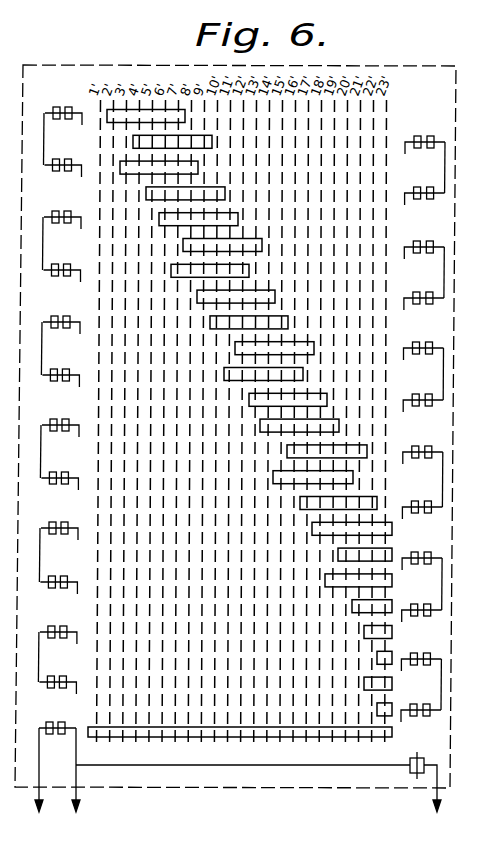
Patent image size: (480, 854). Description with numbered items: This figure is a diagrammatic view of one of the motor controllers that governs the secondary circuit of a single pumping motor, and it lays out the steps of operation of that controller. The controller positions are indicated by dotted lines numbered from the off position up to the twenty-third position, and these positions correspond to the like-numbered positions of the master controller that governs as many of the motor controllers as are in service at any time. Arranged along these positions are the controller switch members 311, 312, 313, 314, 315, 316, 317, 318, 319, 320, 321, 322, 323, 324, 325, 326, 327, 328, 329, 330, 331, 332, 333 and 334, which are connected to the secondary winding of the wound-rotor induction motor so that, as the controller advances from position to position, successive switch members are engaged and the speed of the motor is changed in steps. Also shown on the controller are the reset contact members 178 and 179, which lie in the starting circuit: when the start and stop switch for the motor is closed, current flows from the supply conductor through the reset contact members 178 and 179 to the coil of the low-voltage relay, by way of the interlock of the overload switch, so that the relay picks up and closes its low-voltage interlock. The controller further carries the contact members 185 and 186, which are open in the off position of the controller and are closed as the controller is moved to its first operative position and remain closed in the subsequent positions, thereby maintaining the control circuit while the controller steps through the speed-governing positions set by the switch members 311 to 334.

The controller switch member 311 is at (68, 119).
The controller switch member 312 is at (67, 171).
The controller switch member 313 is at (427, 148).
The controller switch member 314 is at (427, 199).
The controller switch member 315 is at (67, 223).
The controller switch member 316 is at (66, 276).
The controller switch member 317 is at (426, 253).
The controller switch member 318 is at (426, 304).
The controller switch member 319 is at (66, 328).
The controller switch member 320 is at (65, 381).
The controller switch member 321 is at (426, 354).
The controller switch member 322 is at (425, 406).
The controller switch member 323 is at (65, 431).
The controller switch member 324 is at (64, 484).
The controller switch member 325 is at (425, 458).
The controller switch member 326 is at (424, 513).
The controller switch member 327 is at (64, 534).
The controller switch member 328 is at (63, 588).
The controller switch member 329 is at (424, 564).
The controller switch member 330 is at (424, 616).
The controller switch member 331 is at (63, 638).
The controller switch member 332 is at (62, 688).
The controller switch member 333 is at (423, 665).
The controller switch member 334 is at (423, 716).
The contact member 185 is at (66, 736).
The contact member 186 is at (46, 727).
The reset contact member 179 is at (410, 762).
The reset contact member 178 is at (437, 765).